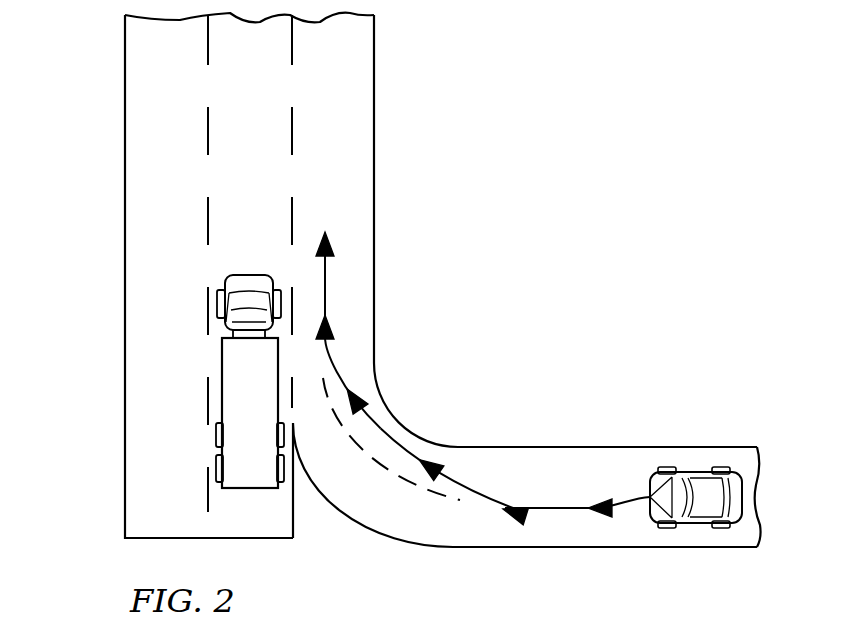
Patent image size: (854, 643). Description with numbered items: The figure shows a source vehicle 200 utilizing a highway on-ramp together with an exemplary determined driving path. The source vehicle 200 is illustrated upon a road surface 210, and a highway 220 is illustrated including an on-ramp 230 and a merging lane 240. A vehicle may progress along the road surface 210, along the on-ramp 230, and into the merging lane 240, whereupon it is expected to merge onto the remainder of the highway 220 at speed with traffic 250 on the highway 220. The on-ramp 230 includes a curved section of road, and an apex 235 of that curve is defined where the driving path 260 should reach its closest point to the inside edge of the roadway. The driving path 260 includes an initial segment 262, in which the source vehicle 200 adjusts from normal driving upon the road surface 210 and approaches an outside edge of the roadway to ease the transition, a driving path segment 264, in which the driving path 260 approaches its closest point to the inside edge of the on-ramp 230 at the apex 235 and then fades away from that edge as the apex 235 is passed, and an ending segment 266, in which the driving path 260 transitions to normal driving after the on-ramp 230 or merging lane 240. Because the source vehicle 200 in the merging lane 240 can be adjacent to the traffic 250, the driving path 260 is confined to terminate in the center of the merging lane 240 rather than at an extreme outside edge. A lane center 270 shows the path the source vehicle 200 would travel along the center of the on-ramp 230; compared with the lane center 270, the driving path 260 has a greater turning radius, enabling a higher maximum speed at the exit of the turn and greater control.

The source vehicle 200 is at (688, 475).
The road surface 210 is at (618, 472).
The highway 220 is at (165, 183).
The on-ramp 230 is at (380, 493).
The apex 235 is at (418, 424).
The merging lane 240 is at (345, 186).
The traffic 250 is at (235, 363).
The driving path 260 is at (447, 470).
The initial segment 262 is at (557, 503).
The driving path segment 264 is at (377, 425).
The ending segment 266 is at (325, 303).
The lane center 270 is at (420, 492).